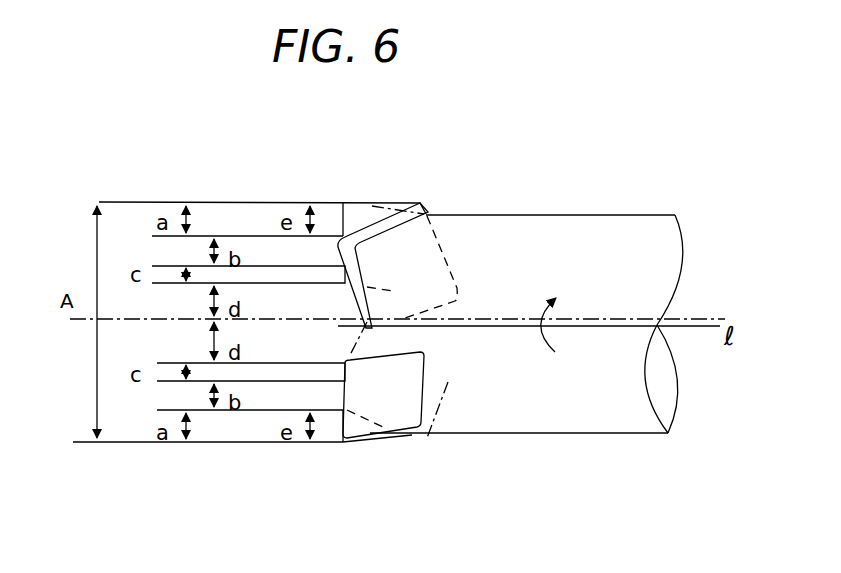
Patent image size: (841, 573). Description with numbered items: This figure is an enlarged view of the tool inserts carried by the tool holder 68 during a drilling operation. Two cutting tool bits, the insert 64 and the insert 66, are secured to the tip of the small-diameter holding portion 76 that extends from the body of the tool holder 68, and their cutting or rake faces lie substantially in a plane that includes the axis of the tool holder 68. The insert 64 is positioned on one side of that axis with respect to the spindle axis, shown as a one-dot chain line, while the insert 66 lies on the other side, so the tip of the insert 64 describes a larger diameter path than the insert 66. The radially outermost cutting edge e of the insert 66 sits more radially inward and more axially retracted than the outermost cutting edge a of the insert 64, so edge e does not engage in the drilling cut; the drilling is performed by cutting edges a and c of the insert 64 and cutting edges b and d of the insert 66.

The insert 64 is at (357, 430).
The insert 66 is at (427, 214).
The tool holder 68 is at (506, 206).
The holding portion 76 is at (572, 414).